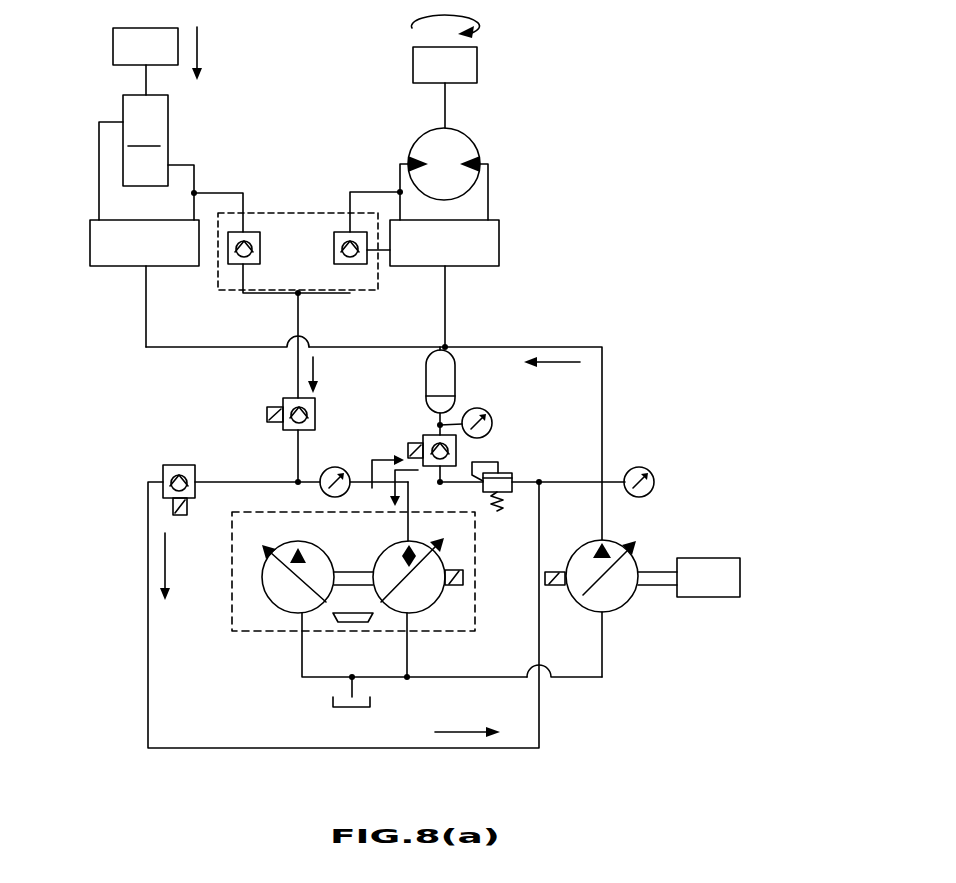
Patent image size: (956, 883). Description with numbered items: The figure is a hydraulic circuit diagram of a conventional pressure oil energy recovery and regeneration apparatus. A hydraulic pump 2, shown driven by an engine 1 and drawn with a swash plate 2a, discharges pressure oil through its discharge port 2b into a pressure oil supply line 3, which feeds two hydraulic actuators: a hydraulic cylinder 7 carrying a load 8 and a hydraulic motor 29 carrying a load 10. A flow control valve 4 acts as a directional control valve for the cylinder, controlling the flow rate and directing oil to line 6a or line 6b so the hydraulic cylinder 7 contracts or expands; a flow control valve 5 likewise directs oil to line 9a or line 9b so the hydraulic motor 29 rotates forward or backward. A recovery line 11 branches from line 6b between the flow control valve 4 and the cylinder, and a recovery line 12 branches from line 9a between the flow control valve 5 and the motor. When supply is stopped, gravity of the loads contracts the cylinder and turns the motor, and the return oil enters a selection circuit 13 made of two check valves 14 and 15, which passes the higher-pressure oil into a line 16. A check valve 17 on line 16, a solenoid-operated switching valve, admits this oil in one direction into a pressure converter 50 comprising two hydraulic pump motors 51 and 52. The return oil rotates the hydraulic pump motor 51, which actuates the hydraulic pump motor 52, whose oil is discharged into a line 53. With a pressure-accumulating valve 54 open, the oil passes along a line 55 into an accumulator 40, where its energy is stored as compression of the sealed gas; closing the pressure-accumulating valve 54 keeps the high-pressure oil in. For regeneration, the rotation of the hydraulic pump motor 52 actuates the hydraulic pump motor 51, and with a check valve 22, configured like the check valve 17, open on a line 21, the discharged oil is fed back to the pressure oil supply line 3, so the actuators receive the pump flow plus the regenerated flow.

The engine 1 is at (702, 598).
The hydraulic pump 2 is at (620, 545).
The swash plate 2a is at (567, 612).
The discharge port 2b is at (600, 540).
The pressure oil supply line 3 is at (603, 373).
The flow control valve 4 is at (118, 267).
The flow control valve 5 is at (499, 230).
The line 6a is at (110, 118).
The line 6b is at (192, 166).
The hydraulic cylinder 7 is at (168, 110).
The load 8 is at (157, 28).
The line 9a is at (400, 162).
The line 9b is at (490, 188).
The load 10 is at (413, 62).
The recovery line 11 is at (243, 193).
The recovery line 12 is at (350, 192).
The selection circuit 13 is at (378, 290).
The check valve 14 is at (237, 268).
The check valve 15 is at (390, 250).
The line 16 is at (296, 360).
The check valve 17 is at (283, 404).
The line 21 is at (148, 543).
The check valve 22 is at (163, 472).
The hydraulic motor 29 is at (473, 142).
The accumulator 40 is at (456, 373).
The pressure converter 50 is at (393, 632).
The hydraulic pump motor 51 is at (280, 608).
The hydraulic pump motor 52 is at (433, 603).
The line 53 is at (416, 482).
The pressure-accumulating valve 54 is at (458, 450).
The line 55 is at (437, 425).